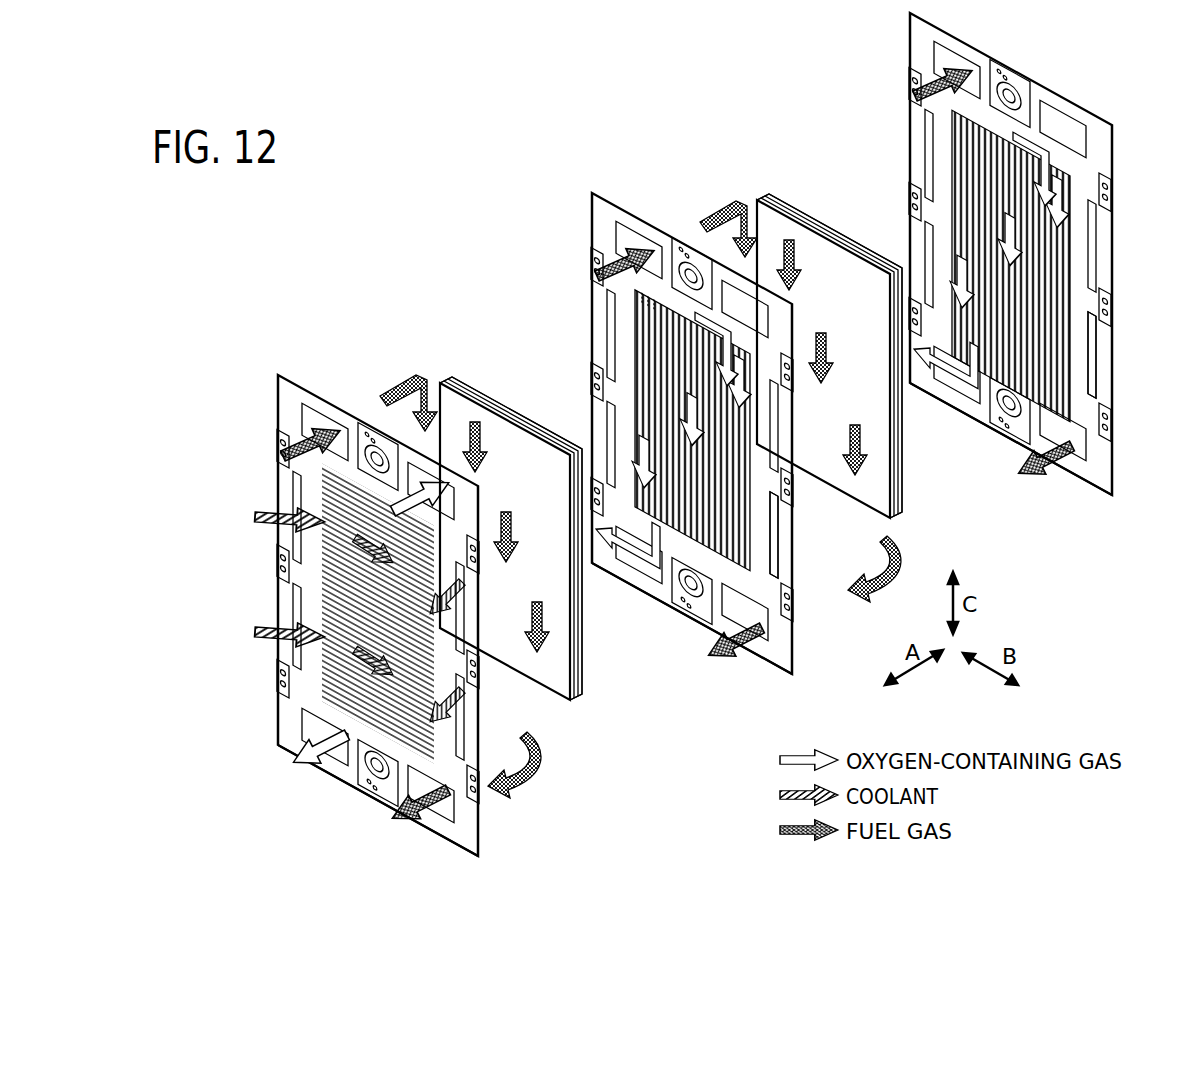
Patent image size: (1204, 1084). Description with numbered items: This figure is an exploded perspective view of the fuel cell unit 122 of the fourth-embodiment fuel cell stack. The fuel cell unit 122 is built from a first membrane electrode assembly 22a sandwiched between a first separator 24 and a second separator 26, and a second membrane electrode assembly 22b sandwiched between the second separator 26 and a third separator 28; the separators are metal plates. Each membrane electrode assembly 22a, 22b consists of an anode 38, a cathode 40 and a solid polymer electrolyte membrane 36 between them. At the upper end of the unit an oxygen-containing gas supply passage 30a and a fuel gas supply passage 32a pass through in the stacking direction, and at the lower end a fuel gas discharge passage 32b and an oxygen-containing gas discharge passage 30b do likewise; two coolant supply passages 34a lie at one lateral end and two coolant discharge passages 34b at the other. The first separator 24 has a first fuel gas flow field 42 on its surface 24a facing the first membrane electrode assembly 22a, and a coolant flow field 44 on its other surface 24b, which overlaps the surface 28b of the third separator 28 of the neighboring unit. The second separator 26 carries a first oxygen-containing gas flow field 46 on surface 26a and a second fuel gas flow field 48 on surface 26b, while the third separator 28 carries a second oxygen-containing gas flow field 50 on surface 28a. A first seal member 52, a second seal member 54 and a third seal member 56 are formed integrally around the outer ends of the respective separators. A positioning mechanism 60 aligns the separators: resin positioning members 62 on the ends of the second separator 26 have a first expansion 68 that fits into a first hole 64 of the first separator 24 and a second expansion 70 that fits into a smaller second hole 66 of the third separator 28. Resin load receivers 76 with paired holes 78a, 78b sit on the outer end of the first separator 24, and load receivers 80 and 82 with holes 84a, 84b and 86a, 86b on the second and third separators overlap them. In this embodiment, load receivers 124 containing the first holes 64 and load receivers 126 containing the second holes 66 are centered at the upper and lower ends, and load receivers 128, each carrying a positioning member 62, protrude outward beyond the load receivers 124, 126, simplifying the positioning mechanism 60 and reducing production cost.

The fuel cell unit 122 is at (216, 222).
The first separator 24 is at (276, 368).
The surface of first separator 24a is at (283, 727).
The surface of first separator 24b is at (283, 707).
The first membrane electrode assembly 22a is at (442, 380).
The second separator 26 is at (590, 190).
The surface of second separator 26a is at (780, 633).
The surface of second separator 26b is at (785, 661).
The second membrane electrode assembly 22b is at (758, 198).
The third separator 28 is at (1113, 122).
The surface of third separator 28a is at (1095, 452).
The surface of third separator 28b is at (1095, 477).
The oxygen-containing gas supply passage 30a is at (455, 500).
The oxygen-containing gas discharge passage 30b is at (338, 752).
The fuel gas supply passage 32a is at (305, 418).
The fuel gas discharge passage 32b is at (450, 818).
The coolant supply passages 34a is at (290, 540).
The coolant discharge passages 34b is at (460, 585).
The solid polymer electrolyte membrane 36 is at (583, 690).
The anode 38 is at (580, 700).
The cathode 40 is at (590, 665).
The first fuel gas flow field 42 is at (452, 612).
The coolant flow field 44 is at (440, 640).
The first oxygen-containing gas flow field 46 is at (730, 488).
The second fuel gas flow field 48 is at (780, 437).
The second oxygen-containing gas flow field 50 is at (1045, 310).
The first seal member 52 is at (483, 712).
The second seal member 54 is at (792, 530).
The third seal member 56 is at (1112, 352).
The positioning mechanism 60 is at (666, 212).
The positioning member 62 is at (667, 250).
The first hole 64 is at (372, 783).
The second hole 66 is at (1003, 425).
The first expansion 68 is at (688, 298).
The second expansion 70 is at (684, 320).
The load receivers 76 is at (276, 467).
The hole 78a is at (281, 440).
The hole 78b is at (281, 453).
The load receivers 80 is at (590, 293).
The hole 84a is at (593, 258).
The hole 84b is at (593, 273).
The load receivers 82 is at (908, 110).
The hole 86a is at (912, 80).
The hole 86b is at (912, 94).
The load receivers 124 is at (363, 425).
The load receivers 126 is at (993, 62).
The load receivers 128 is at (682, 238).